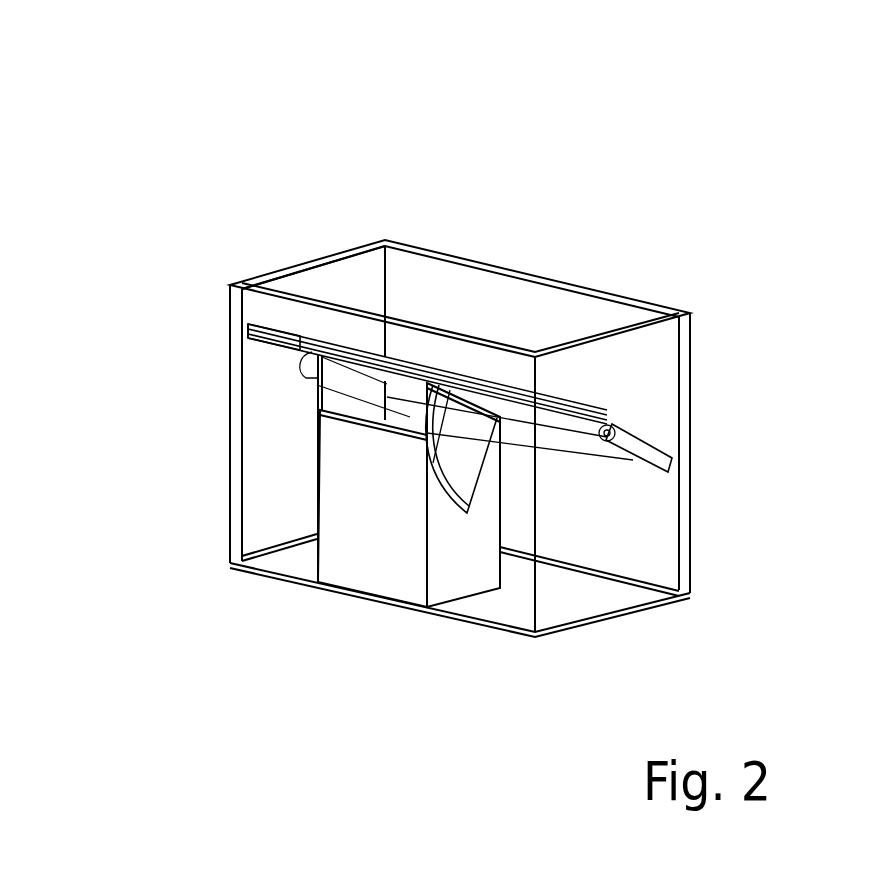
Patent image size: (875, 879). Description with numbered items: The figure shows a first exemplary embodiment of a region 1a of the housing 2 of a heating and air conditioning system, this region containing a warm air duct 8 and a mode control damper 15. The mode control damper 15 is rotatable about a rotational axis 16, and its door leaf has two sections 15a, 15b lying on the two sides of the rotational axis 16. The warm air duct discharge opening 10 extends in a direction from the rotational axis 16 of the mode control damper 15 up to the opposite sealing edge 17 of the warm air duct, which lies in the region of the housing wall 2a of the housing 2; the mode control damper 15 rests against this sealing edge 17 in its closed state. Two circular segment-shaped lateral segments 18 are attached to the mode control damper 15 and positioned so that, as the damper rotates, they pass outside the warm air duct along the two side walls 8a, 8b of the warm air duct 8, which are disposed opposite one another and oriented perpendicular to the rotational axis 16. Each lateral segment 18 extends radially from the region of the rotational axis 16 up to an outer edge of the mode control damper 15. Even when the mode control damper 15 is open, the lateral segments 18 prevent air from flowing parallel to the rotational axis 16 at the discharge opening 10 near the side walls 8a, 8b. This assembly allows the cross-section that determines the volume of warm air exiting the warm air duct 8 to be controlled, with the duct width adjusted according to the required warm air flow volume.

The region of housing 1a is at (259, 221).
The housing 2 is at (222, 287).
The housing wall 2a is at (461, 366).
The warm air duct 8 is at (300, 549).
The side wall of warm air duct 8a is at (304, 561).
The side wall of warm air duct 8b is at (437, 561).
The warm air duct discharge opening 10 is at (394, 413).
The mode control damper 15 is at (616, 424).
The door leaf section 15a is at (268, 340).
The door leaf section 15b is at (639, 462).
The rotational axis 16 is at (317, 385).
The sealing edge 17 is at (391, 444).
The lateral segment 18 is at (313, 356).